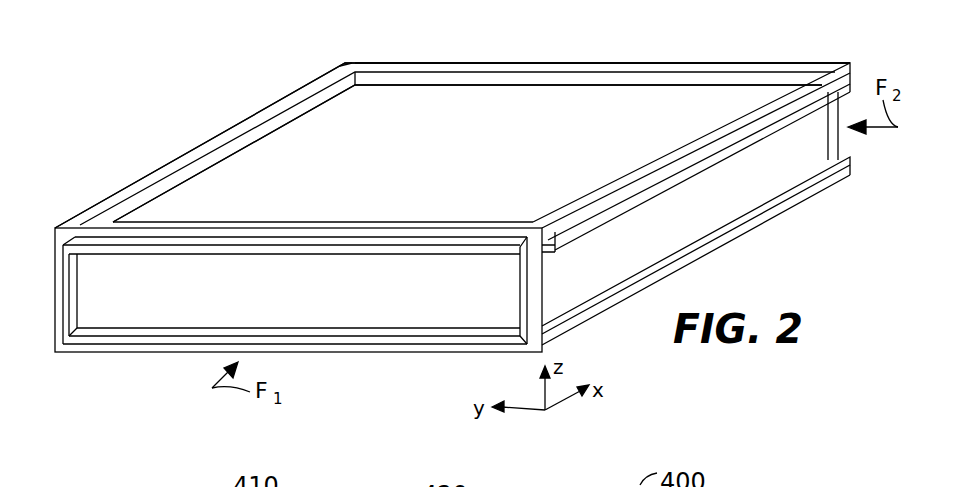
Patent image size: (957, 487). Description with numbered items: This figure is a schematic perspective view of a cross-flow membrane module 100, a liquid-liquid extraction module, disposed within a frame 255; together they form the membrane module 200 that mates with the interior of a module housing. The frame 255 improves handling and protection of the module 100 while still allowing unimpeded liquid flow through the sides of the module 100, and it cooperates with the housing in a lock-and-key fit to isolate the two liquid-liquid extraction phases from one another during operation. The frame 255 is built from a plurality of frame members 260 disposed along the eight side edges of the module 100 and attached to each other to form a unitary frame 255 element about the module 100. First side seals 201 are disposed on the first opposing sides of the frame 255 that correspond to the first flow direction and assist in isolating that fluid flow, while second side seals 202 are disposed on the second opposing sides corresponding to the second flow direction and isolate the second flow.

The cross-flow membrane module 100 is at (277, 170).
The membrane module 200 is at (740, 47).
The first side seals 201 is at (126, 247).
The second side seals 202 is at (743, 143).
The frame 255 is at (338, 58).
The frame members 260 is at (278, 103).